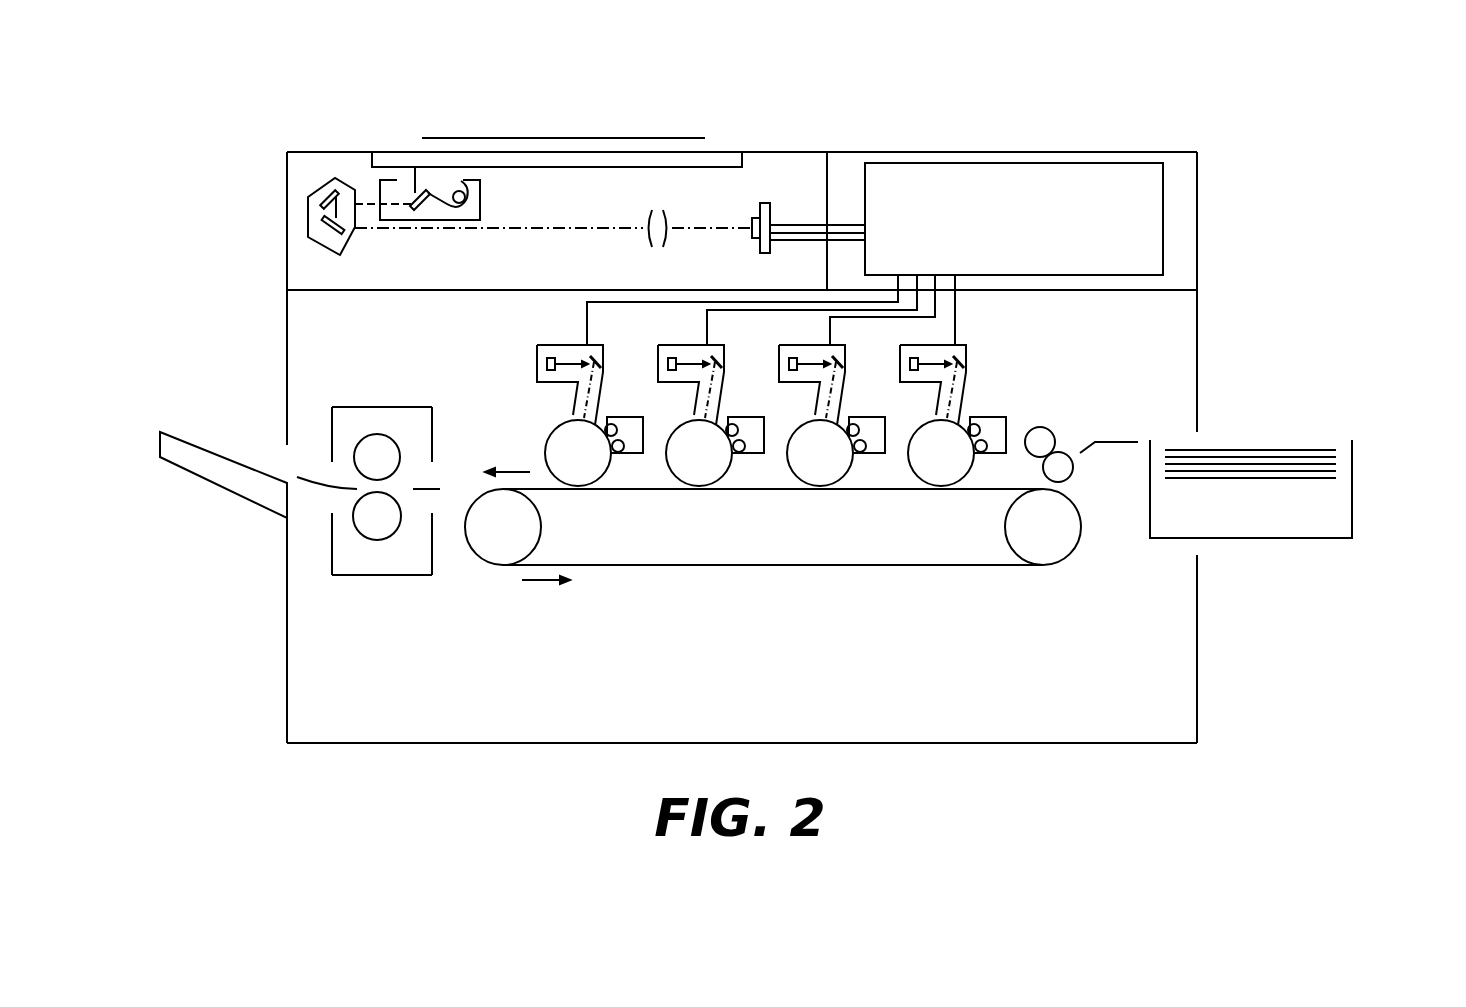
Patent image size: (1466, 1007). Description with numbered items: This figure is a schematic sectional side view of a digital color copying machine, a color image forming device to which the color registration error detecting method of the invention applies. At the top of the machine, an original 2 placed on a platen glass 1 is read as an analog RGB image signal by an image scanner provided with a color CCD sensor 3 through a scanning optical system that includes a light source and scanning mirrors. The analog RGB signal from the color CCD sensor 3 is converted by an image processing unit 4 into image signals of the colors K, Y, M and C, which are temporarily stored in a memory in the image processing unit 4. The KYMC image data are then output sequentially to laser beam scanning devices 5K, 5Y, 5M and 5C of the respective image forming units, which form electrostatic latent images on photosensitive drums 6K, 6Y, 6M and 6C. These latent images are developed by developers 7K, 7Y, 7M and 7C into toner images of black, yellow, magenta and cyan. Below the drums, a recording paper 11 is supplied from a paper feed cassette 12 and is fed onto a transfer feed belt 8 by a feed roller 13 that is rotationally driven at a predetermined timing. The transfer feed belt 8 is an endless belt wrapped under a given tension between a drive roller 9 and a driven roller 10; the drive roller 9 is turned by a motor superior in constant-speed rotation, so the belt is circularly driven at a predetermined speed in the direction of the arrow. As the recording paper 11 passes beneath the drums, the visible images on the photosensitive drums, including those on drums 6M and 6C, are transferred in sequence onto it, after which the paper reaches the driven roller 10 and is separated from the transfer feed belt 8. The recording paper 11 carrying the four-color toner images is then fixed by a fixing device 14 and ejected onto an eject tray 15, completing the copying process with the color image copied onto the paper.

The platen glass 1 is at (727, 152).
The original 2 is at (517, 138).
The color CCD sensor 3 is at (766, 203).
The image processing unit 4 is at (1002, 163).
The laser beam scanning device 5C is at (553, 345).
The laser beam scanning device 5M is at (683, 345).
The laser beam scanning device 5Y is at (799, 345).
The laser beam scanning device 5K is at (968, 347).
The photosensitive drum 6C is at (557, 432).
The photosensitive drum 6M is at (692, 488).
The photosensitive drum 6Y is at (818, 490).
The photosensitive drum 6K is at (939, 487).
The developer 7C is at (628, 455).
The developer 7M is at (750, 455).
The developer 7Y is at (873, 456).
The developer 7K is at (1000, 417).
The transfer feed belt 8 is at (873, 565).
The drive roller 9 is at (1063, 547).
The driven roller 10 is at (493, 552).
The recording paper 11 is at (1232, 449).
The paper feed cassette 12 is at (1352, 495).
The feed roller 13 is at (1053, 425).
The fixing device 14 is at (395, 407).
The eject tray 15 is at (213, 455).